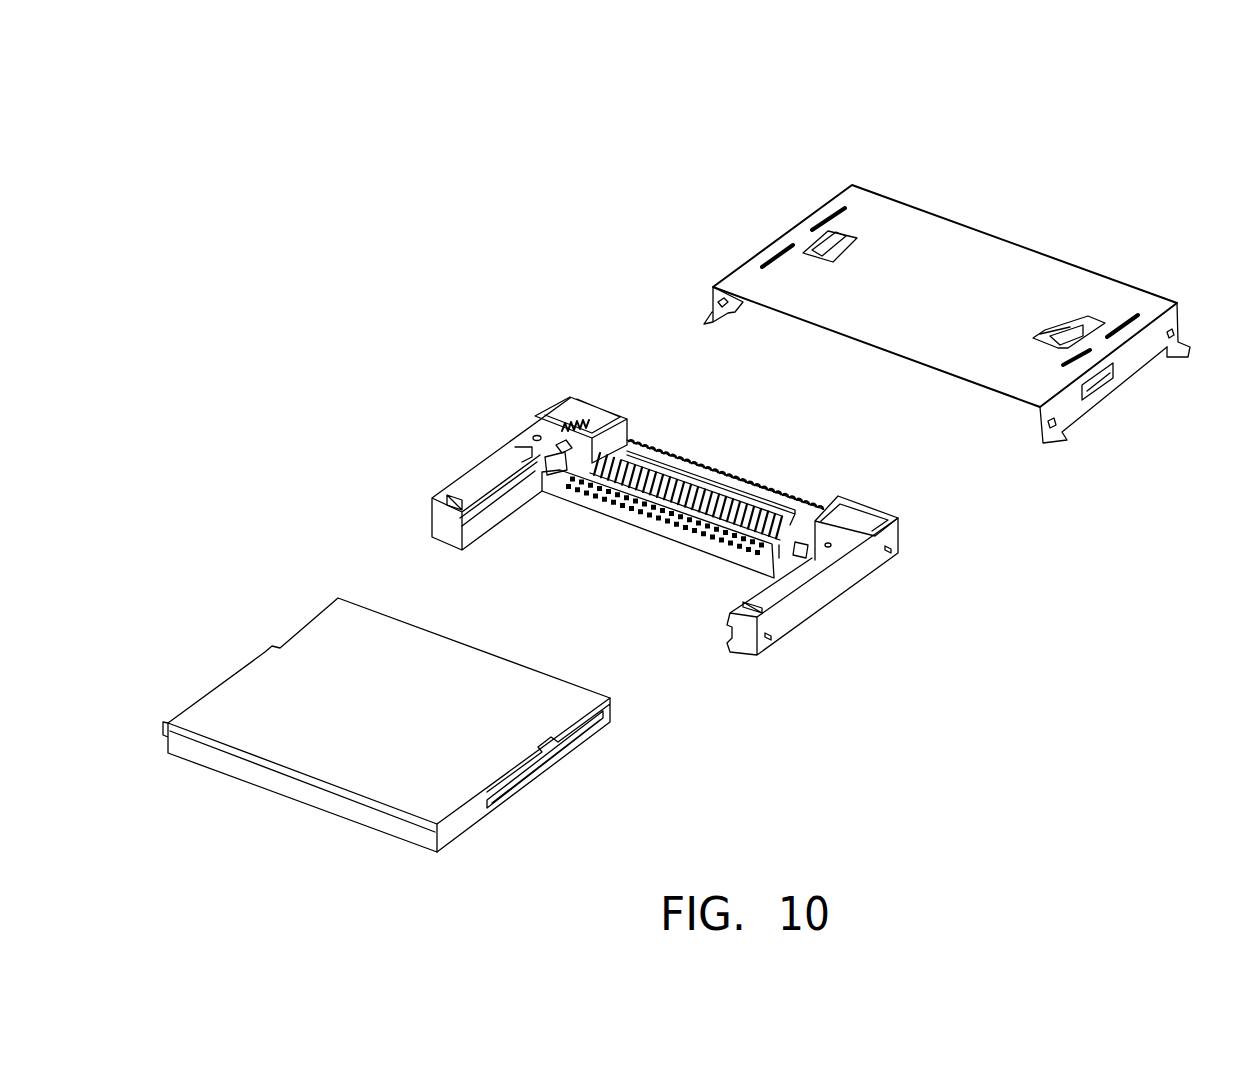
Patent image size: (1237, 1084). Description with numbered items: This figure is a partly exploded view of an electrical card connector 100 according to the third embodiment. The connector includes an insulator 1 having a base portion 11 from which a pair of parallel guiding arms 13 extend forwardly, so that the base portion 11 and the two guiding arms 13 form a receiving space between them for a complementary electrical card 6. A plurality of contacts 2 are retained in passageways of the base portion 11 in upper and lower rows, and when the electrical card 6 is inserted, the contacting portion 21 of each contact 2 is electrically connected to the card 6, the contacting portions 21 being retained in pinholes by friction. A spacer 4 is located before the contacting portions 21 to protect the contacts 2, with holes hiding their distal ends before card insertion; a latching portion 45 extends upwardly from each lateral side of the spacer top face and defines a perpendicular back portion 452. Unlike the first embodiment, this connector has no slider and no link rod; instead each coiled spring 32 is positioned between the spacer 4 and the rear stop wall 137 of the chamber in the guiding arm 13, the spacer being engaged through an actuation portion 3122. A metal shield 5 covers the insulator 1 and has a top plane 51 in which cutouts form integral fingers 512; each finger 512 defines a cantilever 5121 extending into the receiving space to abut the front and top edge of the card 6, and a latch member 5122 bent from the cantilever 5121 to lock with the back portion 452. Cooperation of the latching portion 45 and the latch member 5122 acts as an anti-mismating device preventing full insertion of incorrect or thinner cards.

The metal shield 5 is at (939, 291).
The top plane 51 is at (901, 215).
The finger 512 is at (833, 257).
The cantilever 5121 is at (1047, 334).
The latch member 5122 is at (1088, 324).
The electrical card connector 100 is at (1176, 412).
The insulator 1 is at (661, 482).
The contacts 2 is at (706, 463).
The base portion 11 is at (697, 468).
The contacting portions 21 is at (713, 490).
The rear stop wall 137 is at (636, 354).
The guiding arms 13 is at (843, 585).
The spacer 4 is at (493, 457).
The latching portion 45 is at (532, 460).
The back portion 452 is at (586, 428).
The coiled spring 32 is at (575, 445).
The actuation portion 3122 is at (555, 447).
The electrical card 6 is at (248, 645).